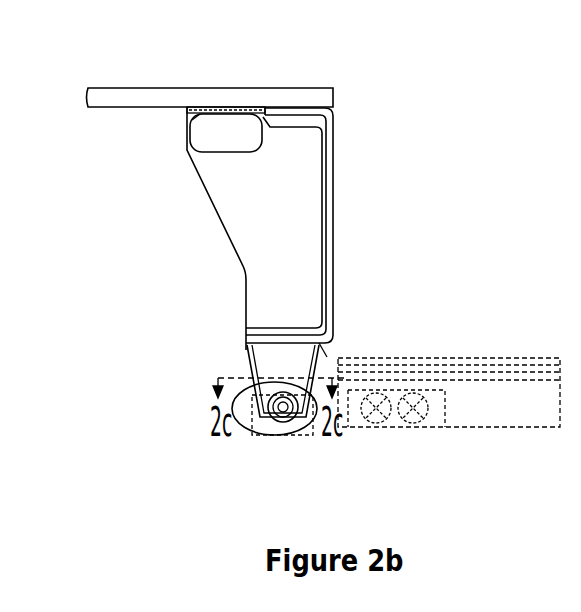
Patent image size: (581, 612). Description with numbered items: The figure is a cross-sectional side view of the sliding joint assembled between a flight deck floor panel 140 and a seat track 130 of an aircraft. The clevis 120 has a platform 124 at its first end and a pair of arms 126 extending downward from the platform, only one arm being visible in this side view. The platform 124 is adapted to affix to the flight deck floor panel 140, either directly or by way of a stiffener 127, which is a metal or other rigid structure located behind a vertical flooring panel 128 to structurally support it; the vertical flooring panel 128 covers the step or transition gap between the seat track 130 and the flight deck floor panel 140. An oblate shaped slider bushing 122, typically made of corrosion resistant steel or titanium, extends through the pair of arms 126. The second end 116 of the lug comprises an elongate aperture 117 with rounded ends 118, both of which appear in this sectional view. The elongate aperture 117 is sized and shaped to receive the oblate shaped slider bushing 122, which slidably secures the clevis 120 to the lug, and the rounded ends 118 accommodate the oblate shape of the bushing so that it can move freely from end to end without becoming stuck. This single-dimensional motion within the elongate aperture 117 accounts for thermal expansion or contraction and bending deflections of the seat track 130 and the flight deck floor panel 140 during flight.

The flight deck floor panel 140 is at (158, 100).
The clevis 120 is at (247, 352).
The vertical flooring panel 128 is at (322, 195).
The stiffener 127 is at (263, 212).
The pair of arms 126 is at (247, 370).
The platform 124 is at (327, 357).
The second end of the lug 116 is at (262, 433).
The rounded ends 118 is at (247, 423).
The elongate aperture 117 is at (297, 425).
The oblate shaped slider bushing 122 is at (278, 427).
The seat track 130 is at (457, 350).